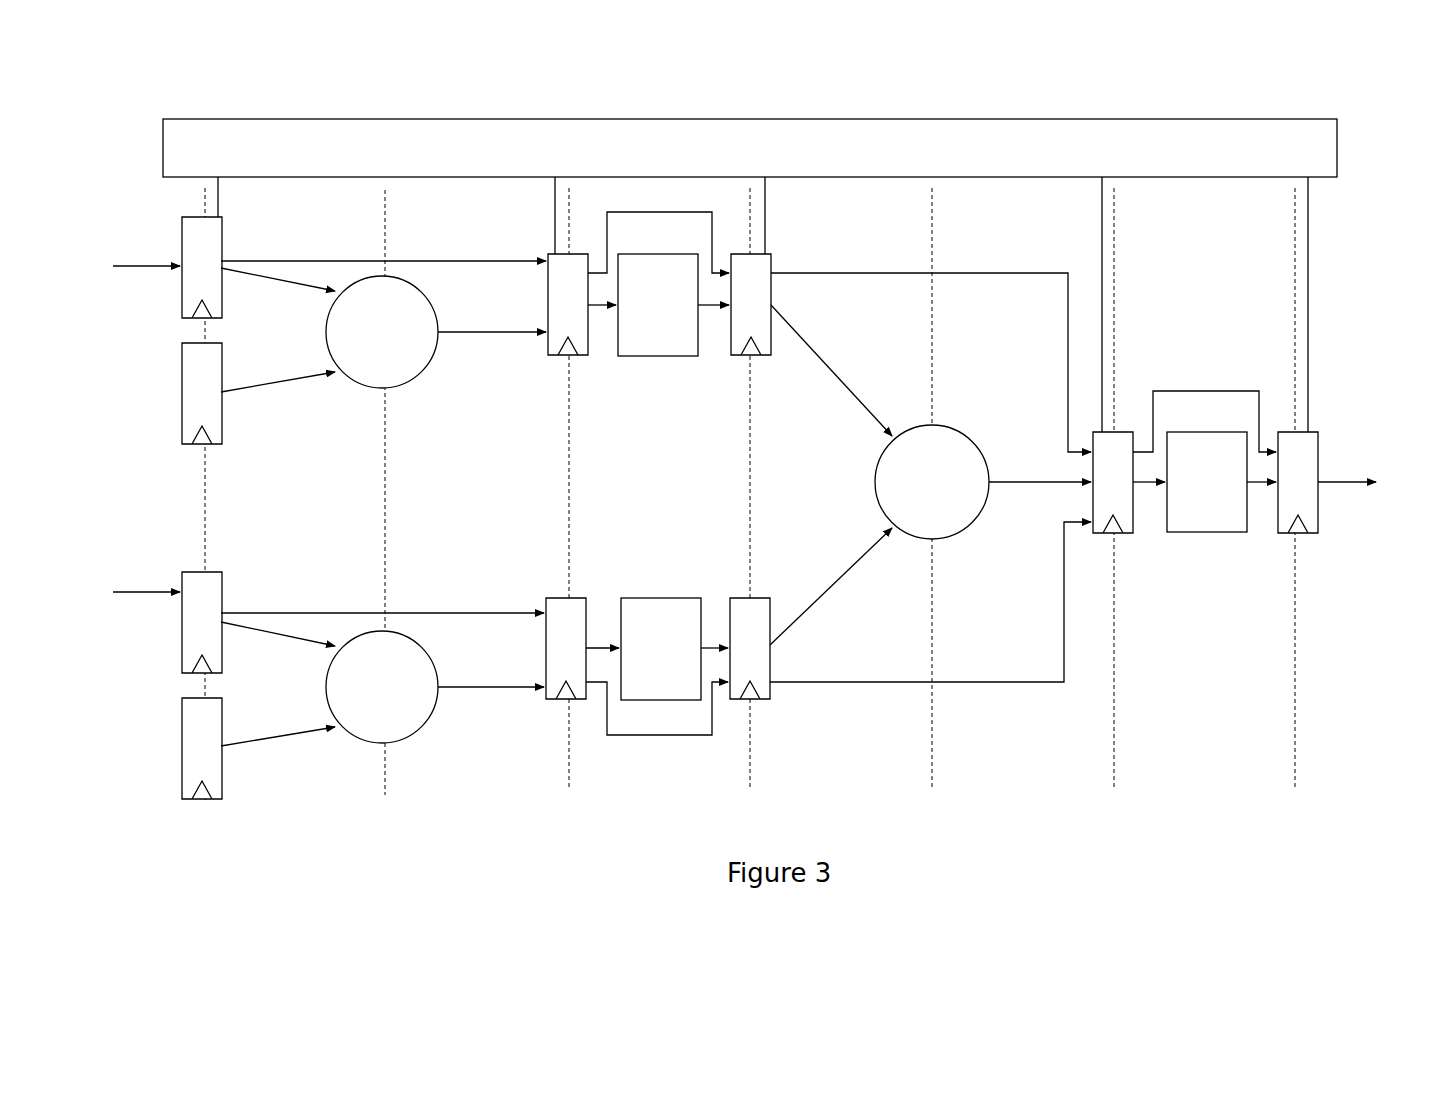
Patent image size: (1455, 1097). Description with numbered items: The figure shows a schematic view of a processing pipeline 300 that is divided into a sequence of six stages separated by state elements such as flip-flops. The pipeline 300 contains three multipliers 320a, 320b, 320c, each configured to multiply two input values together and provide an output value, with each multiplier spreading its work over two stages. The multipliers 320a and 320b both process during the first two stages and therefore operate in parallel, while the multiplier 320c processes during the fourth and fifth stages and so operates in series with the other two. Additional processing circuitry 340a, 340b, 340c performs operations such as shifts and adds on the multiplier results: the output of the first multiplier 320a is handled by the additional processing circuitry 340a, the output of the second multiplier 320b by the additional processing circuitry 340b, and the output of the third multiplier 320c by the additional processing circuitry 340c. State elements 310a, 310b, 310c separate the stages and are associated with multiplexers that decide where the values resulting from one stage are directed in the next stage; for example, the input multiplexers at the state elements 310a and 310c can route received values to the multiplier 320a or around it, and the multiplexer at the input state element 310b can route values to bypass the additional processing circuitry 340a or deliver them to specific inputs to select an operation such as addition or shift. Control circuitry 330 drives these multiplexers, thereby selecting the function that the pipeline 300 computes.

The processing pipeline 300 is at (1340, 791).
The state elements 310a is at (180, 336).
The input state element 310b is at (548, 350).
The state elements 310c is at (180, 691).
The first multiplier 320a is at (376, 388).
The second multiplier 320b is at (418, 728).
The third multiplier 320c is at (973, 523).
The control circuitry 330 is at (1338, 148).
The additional processing circuitry 340a is at (658, 357).
The additional processing circuitry 340b is at (661, 597).
The additional processing circuitry 340c is at (1207, 533).